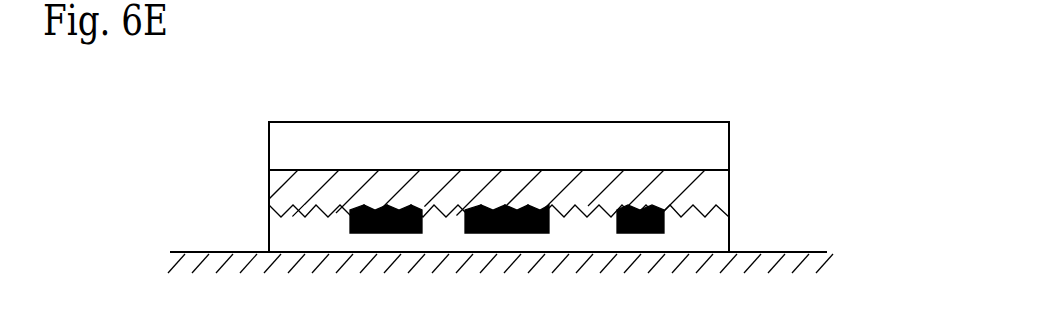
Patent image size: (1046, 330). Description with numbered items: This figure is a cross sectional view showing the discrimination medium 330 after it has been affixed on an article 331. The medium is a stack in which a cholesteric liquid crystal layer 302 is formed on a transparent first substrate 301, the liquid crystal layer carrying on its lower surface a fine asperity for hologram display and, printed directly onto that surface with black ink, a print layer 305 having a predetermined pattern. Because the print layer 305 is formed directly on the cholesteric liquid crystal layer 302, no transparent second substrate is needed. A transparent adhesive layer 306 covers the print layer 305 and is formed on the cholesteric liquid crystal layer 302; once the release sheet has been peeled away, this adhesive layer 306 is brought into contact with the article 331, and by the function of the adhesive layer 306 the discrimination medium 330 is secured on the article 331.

The discrimination medium 330 is at (381, 111).
The transparent first substrate 301 is at (715, 150).
The cholesteric liquid crystal layer 302 is at (715, 188).
The print layer 305 is at (643, 234).
The transparent adhesive layer 306 is at (587, 243).
The article 331 is at (220, 249).